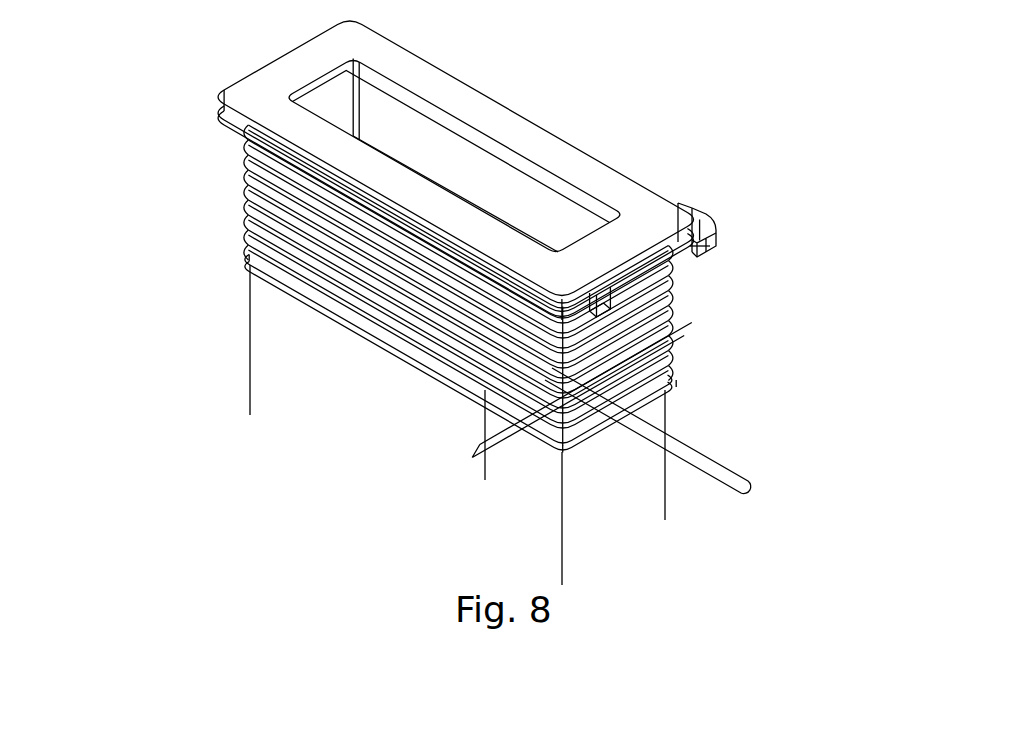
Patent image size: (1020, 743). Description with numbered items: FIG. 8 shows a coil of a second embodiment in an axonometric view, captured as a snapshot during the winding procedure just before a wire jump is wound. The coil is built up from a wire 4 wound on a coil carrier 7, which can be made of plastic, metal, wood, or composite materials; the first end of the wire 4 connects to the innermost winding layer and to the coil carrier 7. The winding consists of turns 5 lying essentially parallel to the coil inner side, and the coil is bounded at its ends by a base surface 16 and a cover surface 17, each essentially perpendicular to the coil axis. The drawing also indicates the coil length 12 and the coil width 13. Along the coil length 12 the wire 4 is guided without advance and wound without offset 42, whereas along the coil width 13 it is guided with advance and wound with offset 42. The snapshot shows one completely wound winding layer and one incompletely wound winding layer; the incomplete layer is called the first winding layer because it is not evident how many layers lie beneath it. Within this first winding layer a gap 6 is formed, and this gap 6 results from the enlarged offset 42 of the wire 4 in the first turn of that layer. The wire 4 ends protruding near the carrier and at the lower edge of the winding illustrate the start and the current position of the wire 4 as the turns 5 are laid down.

The wire 4 is at (682, 218).
The turns 5 is at (290, 268).
The gap 6 is at (458, 311).
The coil carrier 7 is at (290, 62).
The coil length 12 is at (562, 565).
The coil width 13 is at (665, 500).
The base surface 16 is at (243, 268).
The cover surface 17 is at (714, 257).
The offset 42 is at (485, 392).